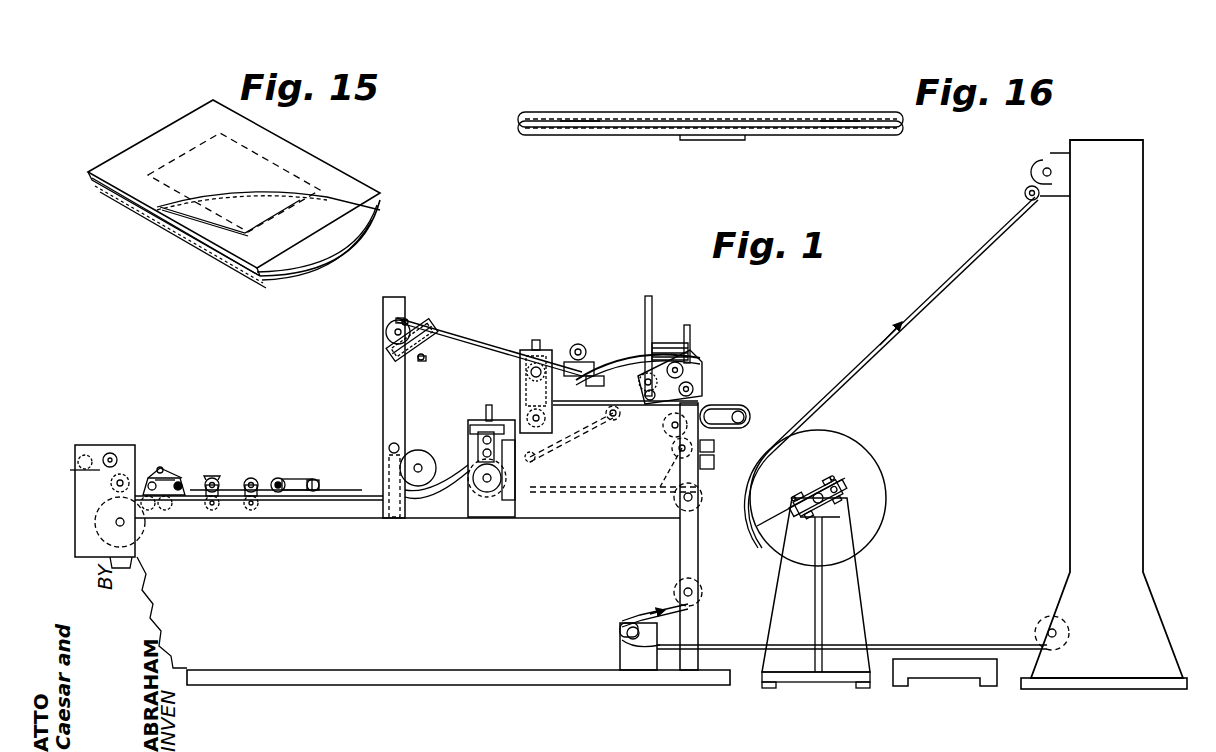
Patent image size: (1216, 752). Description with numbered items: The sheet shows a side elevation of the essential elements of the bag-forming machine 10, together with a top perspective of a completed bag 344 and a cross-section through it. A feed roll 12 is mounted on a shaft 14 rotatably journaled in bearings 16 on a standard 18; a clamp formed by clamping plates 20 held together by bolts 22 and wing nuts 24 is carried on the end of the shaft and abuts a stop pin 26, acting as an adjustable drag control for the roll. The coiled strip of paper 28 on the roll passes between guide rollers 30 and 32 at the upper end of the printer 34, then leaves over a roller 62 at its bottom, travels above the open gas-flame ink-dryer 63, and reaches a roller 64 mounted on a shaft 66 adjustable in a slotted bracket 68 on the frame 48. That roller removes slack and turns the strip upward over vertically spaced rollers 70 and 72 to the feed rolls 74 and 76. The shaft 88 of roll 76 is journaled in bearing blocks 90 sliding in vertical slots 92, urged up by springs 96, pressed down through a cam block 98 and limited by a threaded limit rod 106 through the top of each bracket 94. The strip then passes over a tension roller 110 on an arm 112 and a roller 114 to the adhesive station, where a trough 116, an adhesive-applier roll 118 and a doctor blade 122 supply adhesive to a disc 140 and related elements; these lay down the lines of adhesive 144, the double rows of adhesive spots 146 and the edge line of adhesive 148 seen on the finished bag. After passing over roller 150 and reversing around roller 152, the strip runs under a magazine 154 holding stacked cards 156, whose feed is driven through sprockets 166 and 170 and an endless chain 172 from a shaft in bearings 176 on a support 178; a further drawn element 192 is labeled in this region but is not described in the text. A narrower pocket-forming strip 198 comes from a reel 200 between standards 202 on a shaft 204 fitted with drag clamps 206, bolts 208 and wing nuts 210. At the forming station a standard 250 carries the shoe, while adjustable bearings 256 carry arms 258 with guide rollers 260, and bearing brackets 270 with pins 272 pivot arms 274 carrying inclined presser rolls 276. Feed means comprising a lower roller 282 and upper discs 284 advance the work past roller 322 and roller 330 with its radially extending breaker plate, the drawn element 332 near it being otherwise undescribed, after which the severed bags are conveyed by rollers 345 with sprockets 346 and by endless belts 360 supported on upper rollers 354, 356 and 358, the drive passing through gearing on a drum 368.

In FIG. 1, the machine 10 is at (564, 302).
In FIG. 1, the feed roll 12 is at (848, 452).
In FIG. 1, the shaft 14 is at (818, 492).
In FIG. 15, the bearings 16 is at (318, 150).
In FIG. 1, the bearings 16 is at (806, 516).
In FIG. 1, the standard 18 is at (850, 584).
In FIG. 1, the clamping plates 20 is at (823, 475).
In FIG. 1, the bolts 22 is at (840, 494).
In FIG. 1, the wing nuts 24 is at (836, 484).
In FIG. 1, the stop pin 26 is at (838, 500).
In FIG. 1, the strip of paper 28 is at (964, 266).
In FIG. 1, the guide roller 30 is at (1024, 192).
In FIG. 1, the guide roller 32 is at (1036, 167).
In FIG. 1, the printer 34 is at (1146, 298).
In FIG. 1, the frame 48 is at (383, 686).
In FIG. 1, the roller 62 is at (1042, 626).
In FIG. 1, the open gas-flame ink-dryer 63 is at (928, 668).
In FIG. 1, the roller 64 is at (633, 645).
In FIG. 1, the shaft 66 is at (628, 650).
In FIG. 1, the slotted bracket 68 is at (622, 634).
In FIG. 1, the roller 70 is at (675, 590).
In FIG. 1, the roller 72 is at (700, 495).
In FIG. 1, the feed roll 74 is at (485, 500).
In FIG. 1, the feed roll 76 is at (445, 495).
In FIG. 1, the shaft 88 is at (540, 452).
In FIG. 1, the bearing blocks 90 is at (480, 445).
In FIG. 1, the vertical slot 92 is at (490, 435).
In FIG. 1, the bracket 94 is at (470, 428).
In FIG. 1, the springs 96 is at (512, 500).
In FIG. 1, the cam block 98 is at (491, 450).
In FIG. 1, the adjustable threaded limit rod 106 is at (488, 412).
In FIG. 1, the tension roller 110 is at (538, 458).
In FIG. 1, the arm 112 is at (545, 465).
In FIG. 1, the roller 114 is at (634, 425).
In FIG. 1, the trough 116 is at (710, 466).
In FIG. 1, the adhesive-applier roll 118 is at (663, 480).
In FIG. 1, the doctor blade 122 is at (712, 446).
In FIG. 1, the disc 140 is at (670, 438).
In FIG. 15, the lines of adhesive 144 is at (205, 232).
In FIG. 16, the lines of adhesive 144 is at (544, 114).
In FIG. 15, the adhesive spots 146 is at (293, 246).
In FIG. 15, the line of adhesive 148 is at (347, 237).
In FIG. 16, the line of adhesive 148 is at (725, 137).
In FIG. 1, the roller 150 is at (724, 412).
In FIG. 1, the roller 152 is at (742, 412).
In FIG. 1, the magazine 154 is at (690, 330).
In FIG. 15, the cards 156 is at (262, 212).
In FIG. 1, the cards 156 is at (670, 352).
In FIG. 1, the sprocket 166 is at (694, 386).
In FIG. 1, the sprocket 170 is at (682, 363).
In FIG. 1, the endless chain 172 is at (615, 370).
In FIG. 1, the bearings 176 is at (566, 362).
In FIG. 1, the support 178 is at (586, 340).
In FIG. 1, the guide 192 is at (650, 360).
In FIG. 1, the pocket-forming strip 198 is at (503, 345).
In FIG. 1, the reel 200 is at (418, 330).
In FIG. 1, the standards 202 is at (392, 380).
In FIG. 1, the shaft 204 is at (386, 333).
In FIG. 1, the clamps 206 is at (424, 325).
In FIG. 1, the bolts 208 is at (402, 320).
In FIG. 1, the wing nuts 210 is at (408, 325).
In FIG. 1, the standard 250 is at (392, 446).
In FIG. 1, the bearings 256 is at (392, 435).
In FIG. 1, the arm 258 is at (416, 462).
In FIG. 1, the guide roller 260 is at (416, 490).
In FIG. 1, the bearing bracket 270 is at (325, 488).
In FIG. 1, the pin 272 is at (316, 480).
In FIG. 1, the arm 274 is at (295, 492).
In FIG. 1, the presser roll 276 is at (282, 479).
In FIG. 1, the lower roller 282 is at (252, 512).
In FIG. 1, the upper discs 284 is at (256, 470).
In FIG. 1, the roller 322 is at (213, 512).
In FIG. 1, the roller 330 is at (218, 480).
In FIG. 1, the roller bracket 332 is at (214, 478).
In FIG. 15, the bags 344 is at (352, 177).
In FIG. 1, the rollers 345 is at (155, 512).
In FIG. 1, the sprockets 346 is at (172, 510).
In FIG. 1, the upper roller 354 is at (178, 482).
In FIG. 1, the upper roller 356 is at (158, 468).
In FIG. 1, the upper roller 358 is at (150, 482).
In FIG. 1, the endless belts 360 is at (164, 470).
In FIG. 1, the drum 368 is at (148, 565).